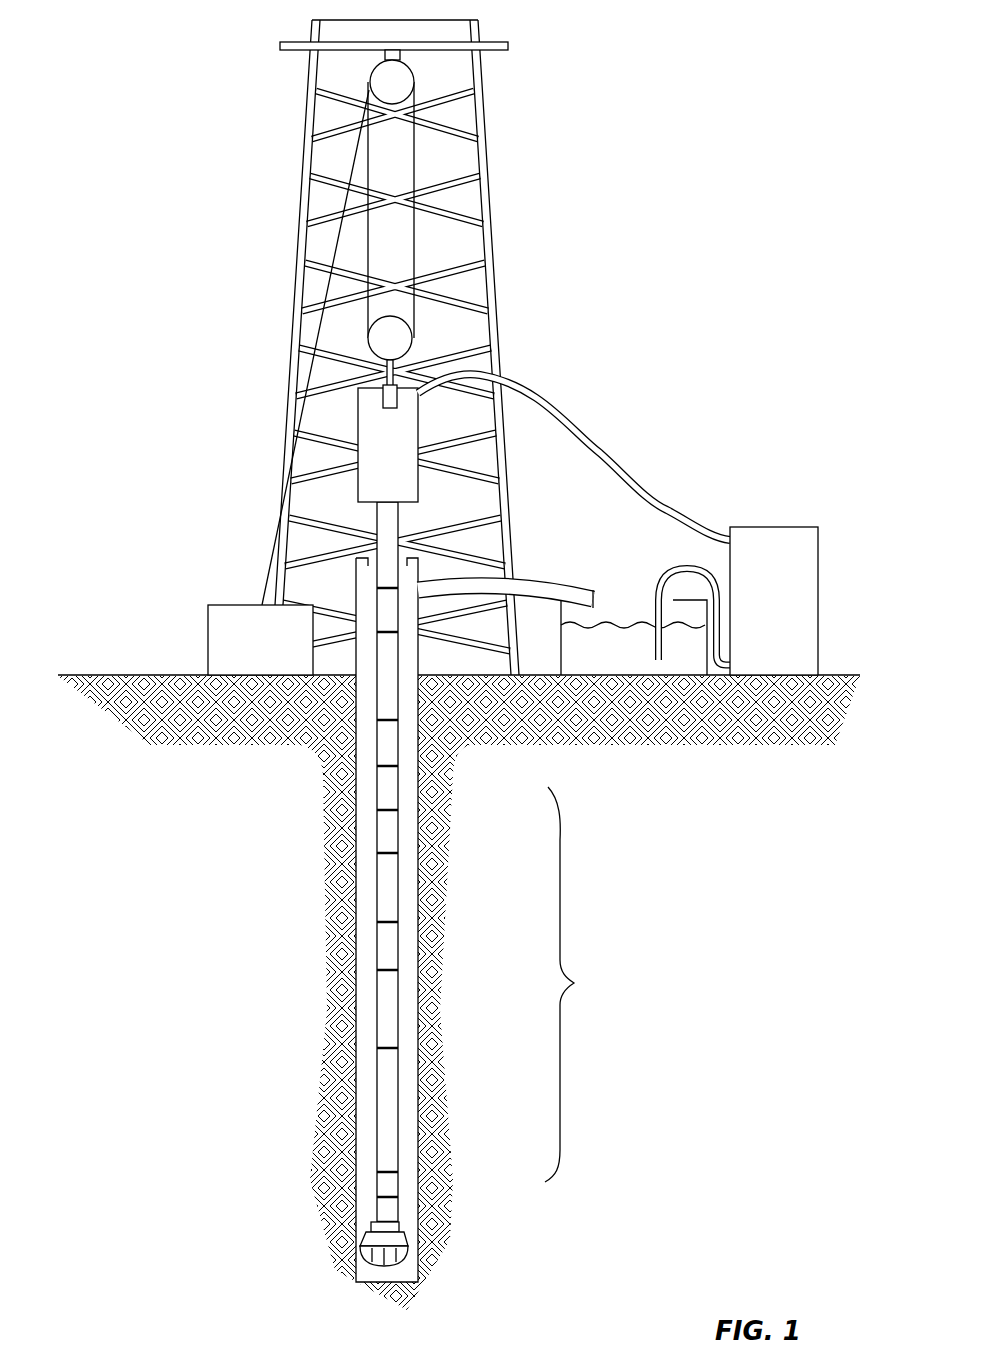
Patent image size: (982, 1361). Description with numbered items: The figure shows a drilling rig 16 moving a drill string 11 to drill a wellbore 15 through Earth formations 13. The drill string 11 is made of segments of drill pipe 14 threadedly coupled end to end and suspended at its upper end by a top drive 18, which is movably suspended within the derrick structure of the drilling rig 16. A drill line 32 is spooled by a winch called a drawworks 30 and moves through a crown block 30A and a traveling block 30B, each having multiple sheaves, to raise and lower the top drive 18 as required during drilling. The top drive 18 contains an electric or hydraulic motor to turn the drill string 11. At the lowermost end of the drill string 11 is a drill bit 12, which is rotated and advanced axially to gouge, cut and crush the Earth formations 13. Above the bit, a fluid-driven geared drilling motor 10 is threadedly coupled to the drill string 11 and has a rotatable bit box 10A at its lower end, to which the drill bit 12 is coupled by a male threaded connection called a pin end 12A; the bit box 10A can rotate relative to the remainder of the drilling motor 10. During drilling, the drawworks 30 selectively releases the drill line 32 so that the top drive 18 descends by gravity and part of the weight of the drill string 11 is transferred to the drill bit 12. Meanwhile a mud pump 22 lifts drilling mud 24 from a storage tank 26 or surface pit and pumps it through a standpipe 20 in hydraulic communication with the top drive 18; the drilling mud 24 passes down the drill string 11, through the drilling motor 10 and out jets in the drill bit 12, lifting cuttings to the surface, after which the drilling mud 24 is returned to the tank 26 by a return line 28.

The drilling motor 10 is at (383, 1092).
The bit box 10A is at (383, 1180).
The drill string 11 is at (575, 984).
The drill bit 12 is at (362, 1255).
The pin end 12A is at (383, 1212).
The Earth formations 13 is at (197, 950).
The drill pipe 14 is at (385, 798).
The wellbore 15 is at (365, 838).
The drilling rig 16 is at (488, 227).
The top drive 18 is at (413, 425).
The standpipe 20 is at (528, 383).
The mud pump 22 is at (812, 528).
The drilling mud 24 is at (643, 662).
The storage tank 26 is at (592, 662).
The return line 28 is at (570, 584).
The drawworks 30 is at (208, 632).
The crown block 30A is at (408, 78).
The traveling block 30B is at (412, 328).
The drill line 32 is at (263, 585).